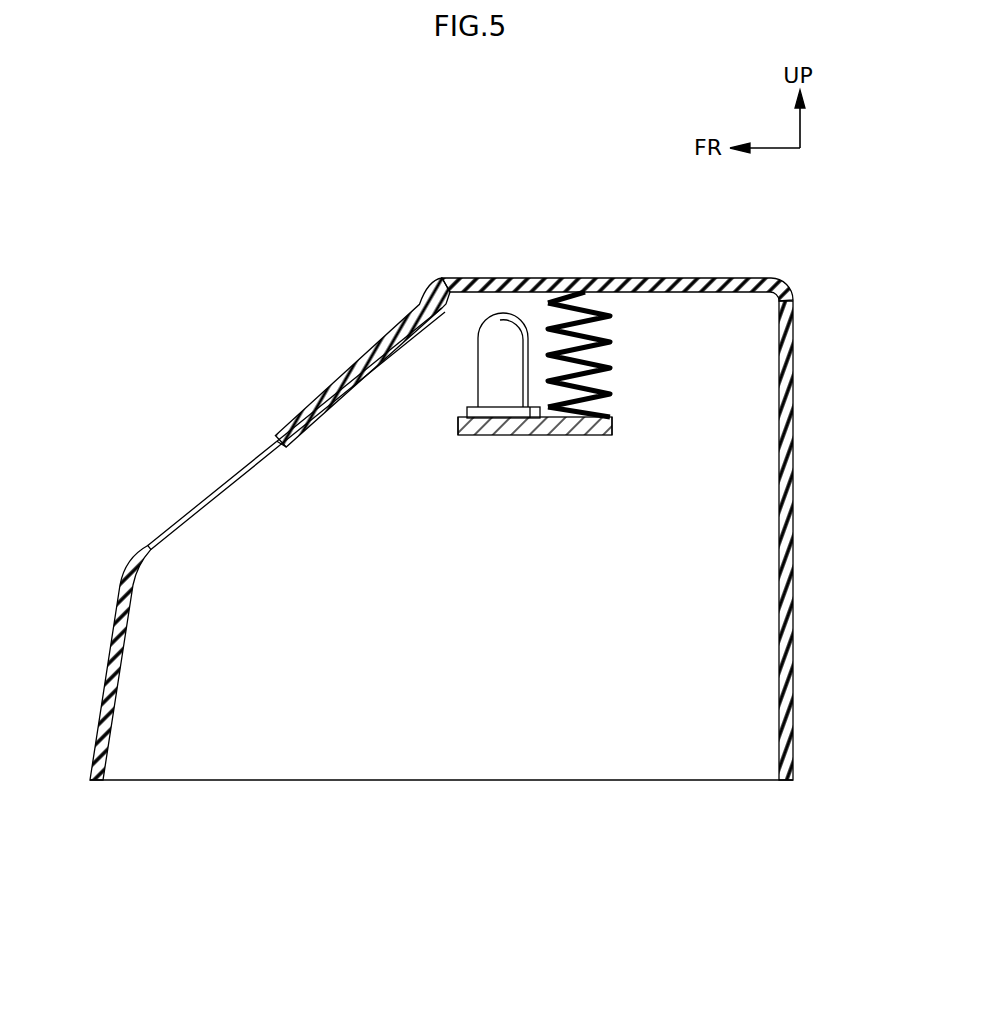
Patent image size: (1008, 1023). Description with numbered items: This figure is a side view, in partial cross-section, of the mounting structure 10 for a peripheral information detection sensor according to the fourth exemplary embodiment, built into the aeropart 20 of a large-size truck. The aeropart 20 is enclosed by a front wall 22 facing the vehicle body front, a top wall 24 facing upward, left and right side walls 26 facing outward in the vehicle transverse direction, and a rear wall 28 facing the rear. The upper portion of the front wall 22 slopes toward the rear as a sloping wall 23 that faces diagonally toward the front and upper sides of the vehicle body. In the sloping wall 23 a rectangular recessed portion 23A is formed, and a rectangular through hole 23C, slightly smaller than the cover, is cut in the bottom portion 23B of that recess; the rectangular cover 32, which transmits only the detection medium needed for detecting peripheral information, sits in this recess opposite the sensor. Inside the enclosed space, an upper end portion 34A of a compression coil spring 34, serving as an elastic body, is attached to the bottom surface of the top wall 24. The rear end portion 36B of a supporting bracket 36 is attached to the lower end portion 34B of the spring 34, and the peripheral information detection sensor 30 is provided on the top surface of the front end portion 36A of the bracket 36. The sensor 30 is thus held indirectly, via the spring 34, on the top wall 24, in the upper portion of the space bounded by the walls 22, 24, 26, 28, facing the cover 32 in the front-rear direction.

The vehicle lamp 10 is at (368, 252).
The aeropart 20 is at (534, 265).
The front wall 22 is at (108, 663).
The sloping wall 23 is at (205, 505).
The recessed portion 23A is at (330, 385).
The bottom portion 23B is at (293, 417).
The through hole 23C is at (322, 422).
The top wall 24 is at (643, 278).
The side wall 26 is at (210, 742).
The rear wall 28 is at (795, 618).
The peripheral information detection sensor 30 is at (495, 372).
The cover 32 is at (350, 367).
The compression coil spring 34 is at (625, 338).
The upper end portion 34A is at (587, 290).
The lower end portion 34B is at (580, 432).
The supporting bracket 36 is at (526, 444).
The front end portion 36A is at (457, 428).
The rear end portion 36B is at (613, 428).